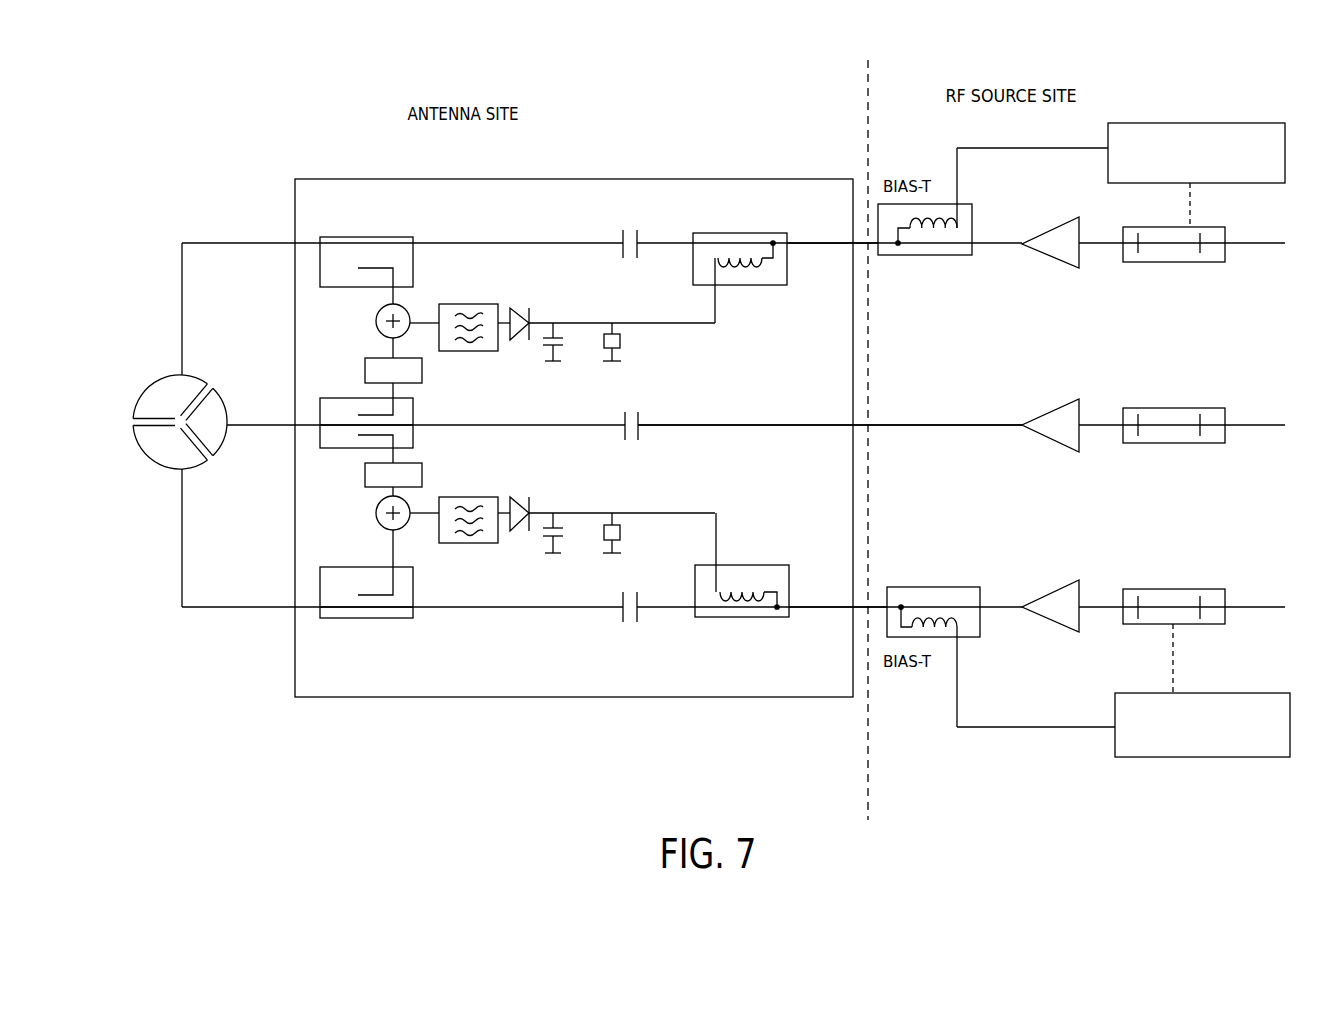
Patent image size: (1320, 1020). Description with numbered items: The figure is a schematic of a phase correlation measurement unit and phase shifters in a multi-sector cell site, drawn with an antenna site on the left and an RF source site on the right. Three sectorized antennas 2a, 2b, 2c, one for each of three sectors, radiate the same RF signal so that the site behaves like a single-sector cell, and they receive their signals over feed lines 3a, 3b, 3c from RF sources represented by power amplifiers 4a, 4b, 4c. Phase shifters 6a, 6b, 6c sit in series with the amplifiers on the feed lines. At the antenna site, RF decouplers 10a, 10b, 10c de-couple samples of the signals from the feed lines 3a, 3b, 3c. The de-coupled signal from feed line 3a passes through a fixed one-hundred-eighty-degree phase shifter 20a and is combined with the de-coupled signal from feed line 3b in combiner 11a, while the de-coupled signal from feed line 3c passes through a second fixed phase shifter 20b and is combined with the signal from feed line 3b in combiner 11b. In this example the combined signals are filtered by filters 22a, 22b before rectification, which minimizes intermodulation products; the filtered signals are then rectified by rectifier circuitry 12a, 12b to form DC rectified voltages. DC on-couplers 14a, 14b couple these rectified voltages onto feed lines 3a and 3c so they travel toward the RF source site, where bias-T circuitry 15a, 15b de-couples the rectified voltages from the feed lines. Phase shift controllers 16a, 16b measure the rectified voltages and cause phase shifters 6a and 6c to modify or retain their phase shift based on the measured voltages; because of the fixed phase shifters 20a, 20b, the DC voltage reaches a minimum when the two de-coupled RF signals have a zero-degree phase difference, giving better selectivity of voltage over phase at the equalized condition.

The sectorized antenna 2a is at (156, 394).
The sectorized antenna 2b is at (208, 406).
The sectorized antenna 2c is at (156, 452).
The feed line 3a is at (822, 243).
The feed line 3b is at (814, 423).
The feed line 3c is at (826, 607).
The power amplifier 4a is at (1056, 227).
The power amplifier 4b is at (1052, 408).
The power amplifier 4c is at (1052, 589).
The phase shifter 6a is at (1225, 232).
The phase shifter 6b is at (1215, 408).
The phase shifter 6c is at (1213, 589).
The RF decoupler 10a is at (348, 237).
The RF decoupler 10b is at (348, 398).
The RF decoupler 10c is at (348, 567).
The combiner 11a is at (408, 313).
The combiner 11b is at (404, 528).
The rectifier circuitry 12a is at (537, 340).
The rectifier circuitry 12b is at (537, 530).
The DC on-coupler 14a is at (708, 233).
The DC on-coupler 14b is at (708, 565).
The bias-T circuitry 15a is at (920, 255).
The bias-T circuitry 15b is at (957, 587).
The phase shift controller 16a is at (1246, 123).
The phase shift controller 16b is at (1200, 757).
The fixed 180° phase shifter 20a is at (422, 372).
The fixed 180° phase shifter 20b is at (418, 463).
The filter 22a is at (481, 304).
The filter 22b is at (481, 497).